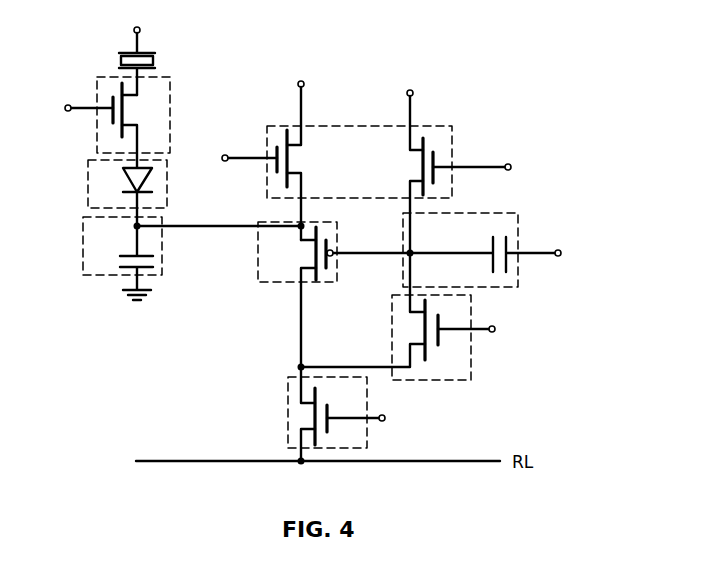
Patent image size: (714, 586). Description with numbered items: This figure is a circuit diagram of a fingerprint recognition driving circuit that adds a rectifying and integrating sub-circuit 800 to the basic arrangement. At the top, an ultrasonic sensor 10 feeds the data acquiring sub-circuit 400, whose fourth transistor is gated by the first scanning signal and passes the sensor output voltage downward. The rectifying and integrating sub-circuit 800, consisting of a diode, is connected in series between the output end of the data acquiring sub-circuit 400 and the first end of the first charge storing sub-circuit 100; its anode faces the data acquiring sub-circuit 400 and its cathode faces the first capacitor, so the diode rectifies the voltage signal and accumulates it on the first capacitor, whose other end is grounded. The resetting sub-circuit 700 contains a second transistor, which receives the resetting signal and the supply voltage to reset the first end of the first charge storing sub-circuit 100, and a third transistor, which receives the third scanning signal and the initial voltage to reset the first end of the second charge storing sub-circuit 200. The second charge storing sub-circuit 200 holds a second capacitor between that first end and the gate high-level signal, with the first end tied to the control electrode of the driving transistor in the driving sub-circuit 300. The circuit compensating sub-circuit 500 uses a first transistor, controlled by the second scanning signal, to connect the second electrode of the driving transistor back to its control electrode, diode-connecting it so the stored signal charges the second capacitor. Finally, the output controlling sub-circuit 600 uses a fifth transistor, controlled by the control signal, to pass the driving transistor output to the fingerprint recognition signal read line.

The ultrasonic sensor 10 is at (148, 50).
The first charge storing sub-circuit 100 is at (162, 265).
The second charge storing sub-circuit 200 is at (520, 233).
The driving sub-circuit 300 is at (337, 245).
The data acquiring sub-circuit 400 is at (170, 110).
The circuit compensating sub-circuit 500 is at (393, 318).
The output controlling sub-circuit 600 is at (288, 398).
The resetting sub-circuit 700 is at (437, 122).
The rectifying and integrating sub-circuit 800 is at (167, 193).